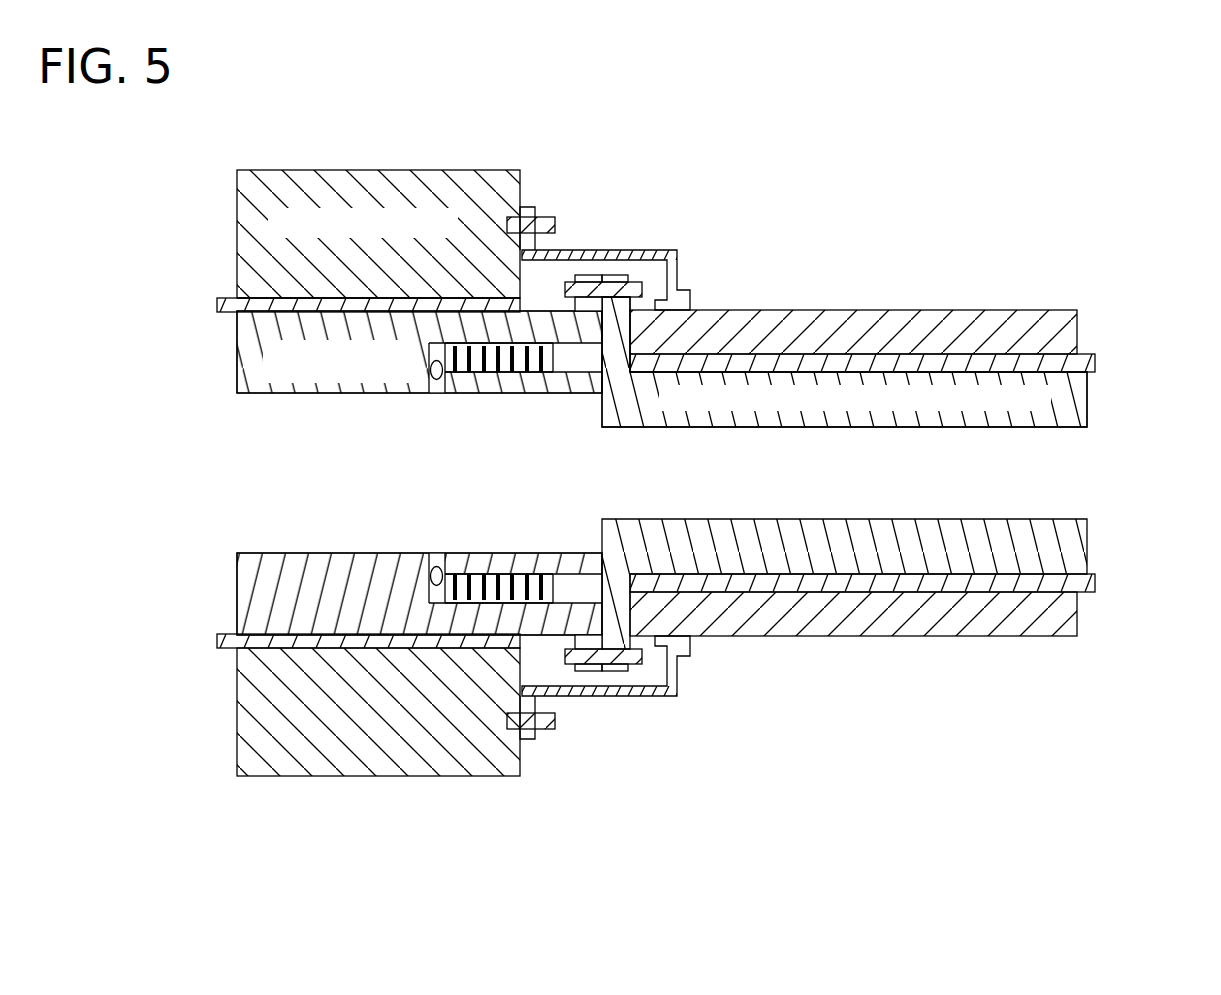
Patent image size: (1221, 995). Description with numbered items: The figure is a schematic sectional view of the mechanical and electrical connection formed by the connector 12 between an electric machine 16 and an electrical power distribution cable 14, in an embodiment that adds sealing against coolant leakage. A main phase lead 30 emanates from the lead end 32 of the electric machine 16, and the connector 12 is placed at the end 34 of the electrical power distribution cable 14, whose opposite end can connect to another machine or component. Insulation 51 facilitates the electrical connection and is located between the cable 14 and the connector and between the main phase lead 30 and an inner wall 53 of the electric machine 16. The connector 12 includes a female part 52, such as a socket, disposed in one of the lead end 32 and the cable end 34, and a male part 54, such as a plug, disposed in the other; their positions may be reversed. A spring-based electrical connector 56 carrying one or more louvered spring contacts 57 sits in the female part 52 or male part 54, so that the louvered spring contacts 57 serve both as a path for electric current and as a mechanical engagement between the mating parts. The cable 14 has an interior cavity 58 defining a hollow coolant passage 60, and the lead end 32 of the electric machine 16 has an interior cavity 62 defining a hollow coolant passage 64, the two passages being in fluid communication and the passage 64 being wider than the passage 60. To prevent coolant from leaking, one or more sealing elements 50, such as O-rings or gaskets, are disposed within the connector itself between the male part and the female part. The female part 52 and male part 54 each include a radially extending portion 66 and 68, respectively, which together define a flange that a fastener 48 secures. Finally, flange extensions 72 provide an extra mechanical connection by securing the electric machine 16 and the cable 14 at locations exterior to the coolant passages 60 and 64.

The connector 12 is at (868, 262).
The electrical power distribution cable 14 is at (1080, 547).
The electric machine 16 is at (332, 168).
The main phase lead 30 is at (237, 380).
The lead end 32 is at (515, 767).
The end of the electrical power distribution cable 34 is at (447, 556).
The fastener 48 is at (537, 215).
The sealing element 50 is at (437, 360).
The insulation 51 is at (218, 299).
The female part 52 is at (430, 364).
The inner wall 53 is at (273, 303).
The male part 54 is at (476, 383).
The spring-based electrical connector 56 is at (525, 395).
The louvered spring contacts 57 is at (467, 600).
The interior cavity 58 is at (850, 498).
The hollow coolant passage 60 is at (1012, 476).
The interior cavity 62 is at (397, 520).
The hollow coolant passage 64 is at (273, 513).
The radially extending portion 66 is at (580, 275).
The radially extending portion 68 is at (618, 275).
The flange extensions 72 is at (663, 252).